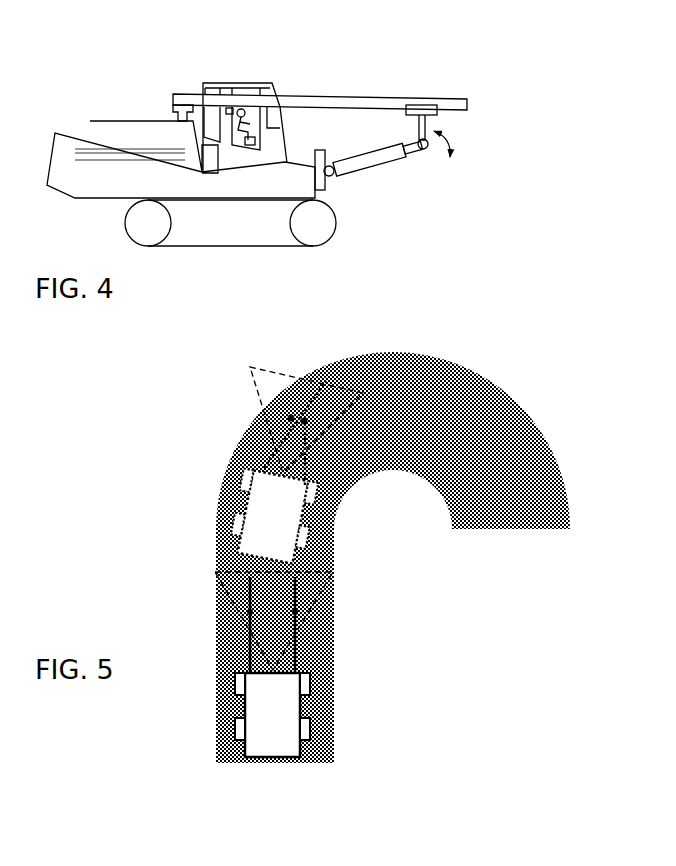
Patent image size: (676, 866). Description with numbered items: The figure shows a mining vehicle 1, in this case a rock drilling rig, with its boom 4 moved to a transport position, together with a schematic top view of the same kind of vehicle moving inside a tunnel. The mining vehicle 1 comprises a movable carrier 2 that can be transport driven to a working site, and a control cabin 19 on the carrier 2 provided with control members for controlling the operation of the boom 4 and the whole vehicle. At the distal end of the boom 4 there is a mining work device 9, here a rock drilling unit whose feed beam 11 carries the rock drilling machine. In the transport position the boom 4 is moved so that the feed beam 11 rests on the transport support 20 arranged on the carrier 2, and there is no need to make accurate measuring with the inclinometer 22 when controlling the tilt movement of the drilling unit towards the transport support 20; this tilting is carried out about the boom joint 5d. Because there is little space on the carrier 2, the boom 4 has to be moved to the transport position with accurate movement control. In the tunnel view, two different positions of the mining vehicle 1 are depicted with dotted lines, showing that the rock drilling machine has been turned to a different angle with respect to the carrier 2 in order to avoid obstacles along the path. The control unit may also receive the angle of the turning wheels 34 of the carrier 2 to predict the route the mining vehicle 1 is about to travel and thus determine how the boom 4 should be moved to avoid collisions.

In FIG. 4, the mining vehicle 1 is at (147, 51).
In FIG. 5, the mining vehicle 1 is at (226, 548).
In FIG. 4, the carrier 2 is at (102, 162).
In FIG. 5, the boom 4 is at (262, 465).
In FIG. 4, the hydraulic cylinder 5d is at (428, 150).
In FIG. 5, the mining work device 9 is at (262, 440).
In FIG. 4, the feed beam 11 is at (318, 95).
In FIG. 4, the control cabin 19 is at (250, 82).
In FIG. 4, the transport support 20 is at (173, 108).
In FIG. 4, the inclinometer 22 is at (229, 108).
In FIG. 5, the turning wheels 34 is at (231, 527).